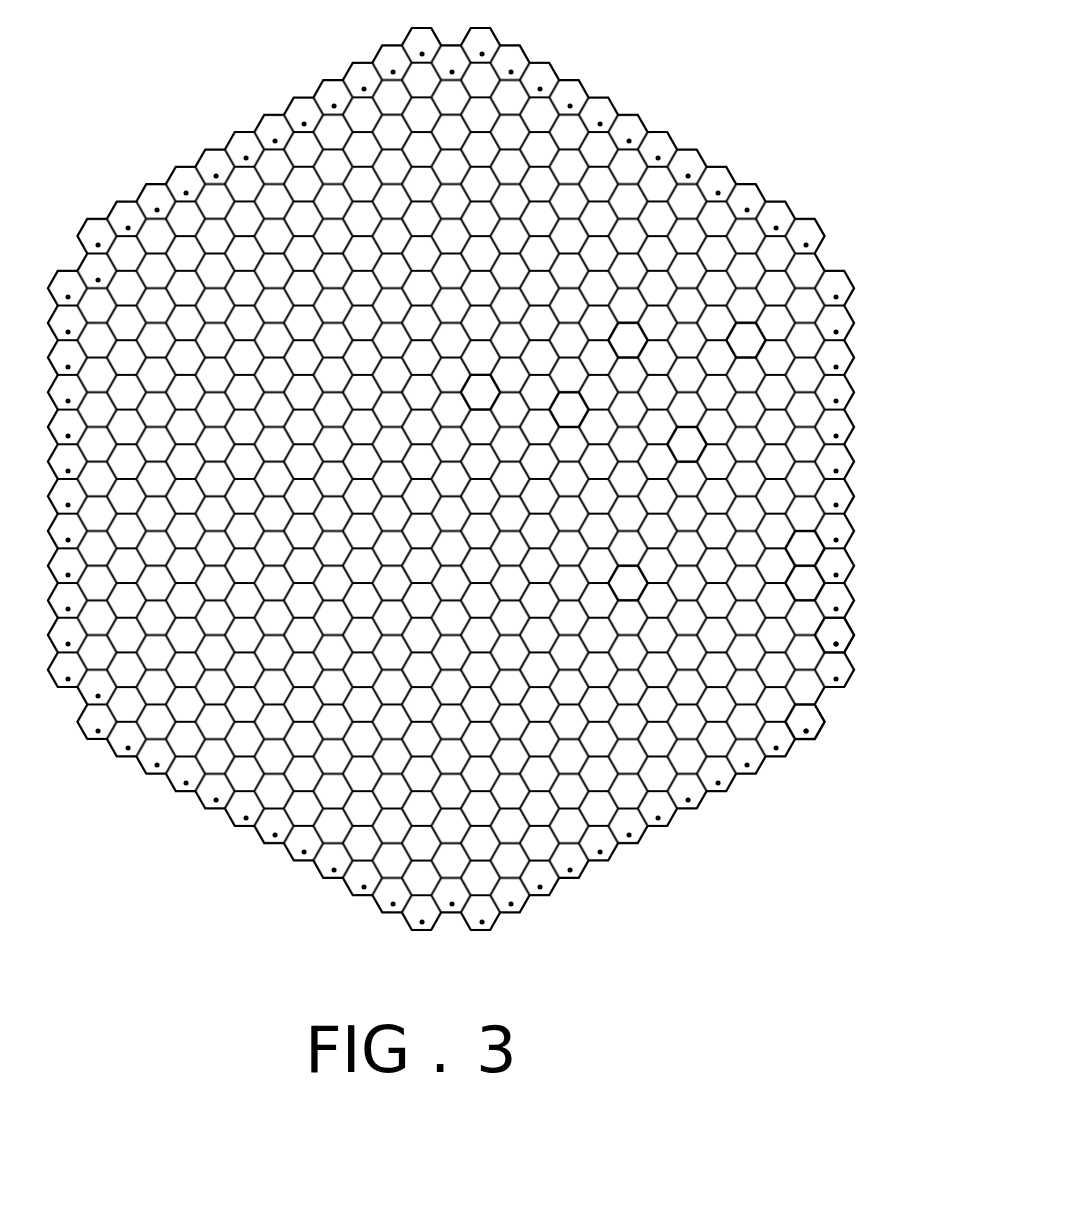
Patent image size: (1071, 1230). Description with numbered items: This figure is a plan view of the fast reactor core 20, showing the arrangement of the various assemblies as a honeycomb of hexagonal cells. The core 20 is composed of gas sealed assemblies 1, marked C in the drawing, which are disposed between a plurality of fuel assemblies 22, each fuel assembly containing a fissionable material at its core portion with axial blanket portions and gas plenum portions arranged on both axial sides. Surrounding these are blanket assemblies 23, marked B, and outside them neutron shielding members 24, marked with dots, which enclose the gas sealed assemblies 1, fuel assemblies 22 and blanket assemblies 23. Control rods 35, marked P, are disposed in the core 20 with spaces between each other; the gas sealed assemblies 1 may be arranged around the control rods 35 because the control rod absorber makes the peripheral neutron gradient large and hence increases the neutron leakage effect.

The core 20 is at (729, 147).
The fuel assemblies 22 is at (745, 343).
The gas sealed assemblies 1 is at (697, 440).
The blanket assemblies 23 is at (813, 583).
The neutron shielding members 24 is at (815, 722).
The control rods 35 is at (632, 588).